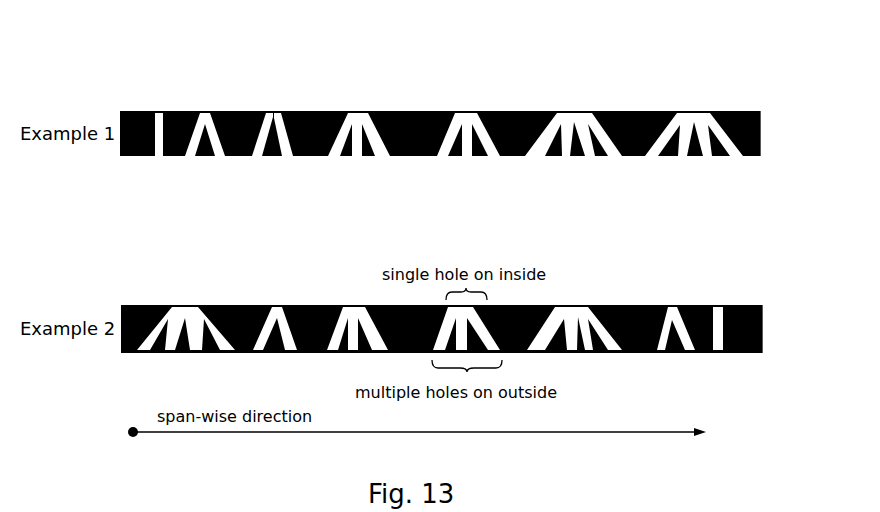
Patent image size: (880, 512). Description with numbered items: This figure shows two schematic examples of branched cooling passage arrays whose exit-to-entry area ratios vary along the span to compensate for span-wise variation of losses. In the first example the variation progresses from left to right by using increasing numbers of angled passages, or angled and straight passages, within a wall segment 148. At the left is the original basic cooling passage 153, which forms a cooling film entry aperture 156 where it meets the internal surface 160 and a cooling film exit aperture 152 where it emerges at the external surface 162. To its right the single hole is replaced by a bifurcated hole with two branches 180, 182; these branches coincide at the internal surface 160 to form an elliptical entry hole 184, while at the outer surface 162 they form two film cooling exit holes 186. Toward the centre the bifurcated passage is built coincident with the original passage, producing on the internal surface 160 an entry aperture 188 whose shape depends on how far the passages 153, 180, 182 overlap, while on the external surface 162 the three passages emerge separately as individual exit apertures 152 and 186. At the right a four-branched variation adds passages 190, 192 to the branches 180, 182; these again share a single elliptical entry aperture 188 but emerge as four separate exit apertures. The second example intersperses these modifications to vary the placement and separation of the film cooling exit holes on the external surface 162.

The airfoil skin segment 148 is at (778, 136).
The cooling film exit aperture 152 is at (157, 157).
The original basic cooling passage 153 is at (165, 157).
The cooling film entry aperture 156 is at (158, 111).
The internal surface 160 is at (737, 111).
The external surface 162 is at (752, 157).
The branch passage 180 is at (268, 111).
The branch passage 182 is at (281, 111).
The elliptical entry hole 184 is at (273, 100).
The film cooling exit holes 186 is at (260, 157).
The entry aperture 188 is at (470, 100).
The additional passage 190 is at (650, 157).
The additional passage 192 is at (734, 157).